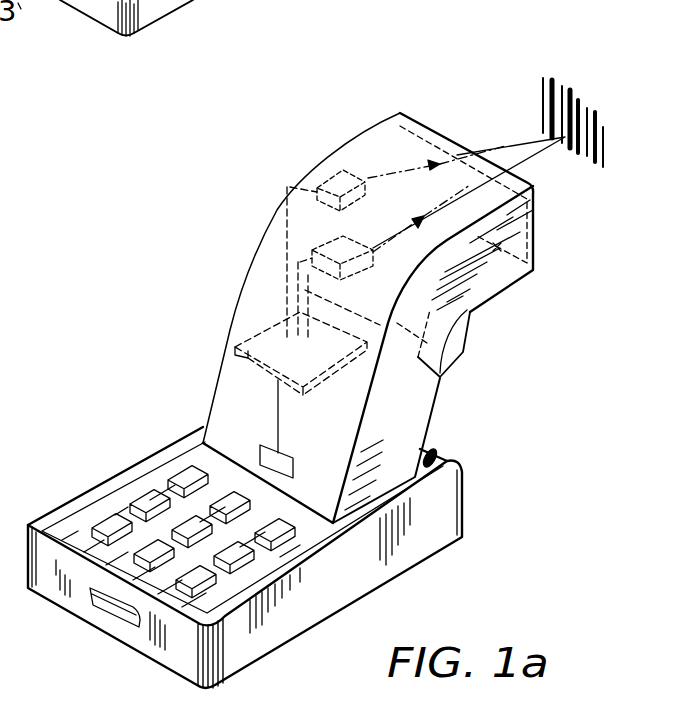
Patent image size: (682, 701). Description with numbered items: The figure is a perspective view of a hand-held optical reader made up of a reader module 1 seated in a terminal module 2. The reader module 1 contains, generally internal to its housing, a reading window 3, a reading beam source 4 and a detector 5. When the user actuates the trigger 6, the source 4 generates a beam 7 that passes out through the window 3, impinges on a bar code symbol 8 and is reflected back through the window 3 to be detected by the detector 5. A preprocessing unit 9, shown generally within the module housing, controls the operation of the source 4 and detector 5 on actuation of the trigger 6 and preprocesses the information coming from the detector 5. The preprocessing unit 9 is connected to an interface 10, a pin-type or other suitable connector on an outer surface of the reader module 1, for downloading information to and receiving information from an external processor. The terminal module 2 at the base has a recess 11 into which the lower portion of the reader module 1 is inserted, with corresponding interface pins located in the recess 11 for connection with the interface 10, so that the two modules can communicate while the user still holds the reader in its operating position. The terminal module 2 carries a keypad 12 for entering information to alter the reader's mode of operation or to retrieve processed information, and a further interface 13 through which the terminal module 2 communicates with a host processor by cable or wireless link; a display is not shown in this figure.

The reader module 1 is at (272, 228).
The terminal module 2 is at (442, 523).
The reading window 3 is at (463, 147).
The reading beam source 4 is at (333, 182).
The detector 5 is at (300, 266).
The trigger 6 is at (460, 343).
The beam 7 is at (533, 160).
The bar code symbol 8 is at (552, 62).
The preprocessing unit 9 is at (235, 359).
The interface 10 is at (270, 447).
The recess 11 is at (433, 457).
The keypad 12 is at (143, 508).
The interface 13 is at (93, 603).